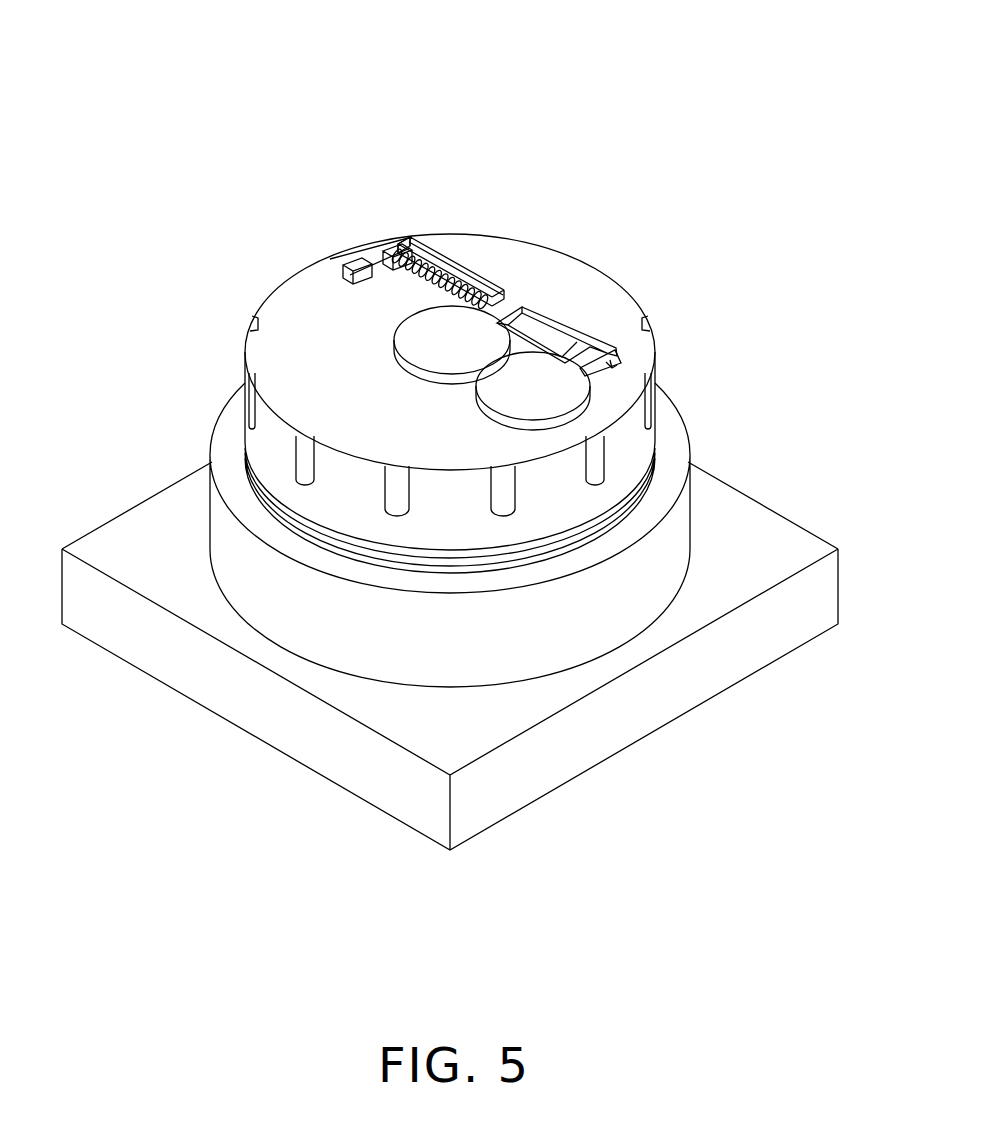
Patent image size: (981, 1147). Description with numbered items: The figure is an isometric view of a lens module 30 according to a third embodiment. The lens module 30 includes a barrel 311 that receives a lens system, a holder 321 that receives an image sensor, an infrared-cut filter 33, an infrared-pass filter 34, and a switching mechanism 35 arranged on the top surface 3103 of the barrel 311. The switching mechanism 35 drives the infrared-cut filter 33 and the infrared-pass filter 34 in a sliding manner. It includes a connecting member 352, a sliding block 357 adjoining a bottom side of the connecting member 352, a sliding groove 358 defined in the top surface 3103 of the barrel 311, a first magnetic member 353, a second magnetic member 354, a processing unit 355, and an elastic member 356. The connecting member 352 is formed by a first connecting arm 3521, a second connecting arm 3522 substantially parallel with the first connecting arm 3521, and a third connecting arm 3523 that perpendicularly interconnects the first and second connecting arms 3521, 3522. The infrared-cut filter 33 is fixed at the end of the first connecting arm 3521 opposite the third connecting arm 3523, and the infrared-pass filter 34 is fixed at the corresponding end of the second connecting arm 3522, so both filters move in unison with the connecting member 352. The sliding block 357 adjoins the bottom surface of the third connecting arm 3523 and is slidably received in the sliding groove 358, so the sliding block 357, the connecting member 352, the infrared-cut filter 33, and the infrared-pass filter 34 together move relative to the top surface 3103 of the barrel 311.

The lens module 30 is at (450, 430).
The switching mechanism 35 is at (500, 235).
The processing unit 355 is at (350, 257).
The second magnetic member 354 is at (383, 253).
The sliding groove 358 is at (433, 250).
The elastic member 356 is at (443, 277).
The first magnetic member 353 is at (493, 300).
The connecting member 352 is at (630, 266).
The first connecting arm 3521 is at (503, 310).
The third connecting arm 3523 is at (560, 323).
The second connecting arm 3522 is at (583, 353).
The sliding block 357 is at (713, 262).
The top surface 3103 is at (283, 333).
The infrared-cut filter 33 is at (412, 343).
The infrared-pass filter 34 is at (560, 388).
The barrel 311 is at (607, 443).
The holder 321 is at (655, 512).